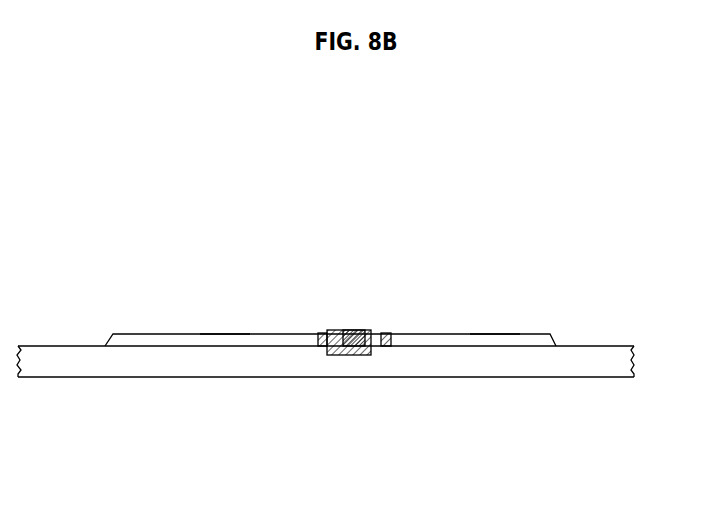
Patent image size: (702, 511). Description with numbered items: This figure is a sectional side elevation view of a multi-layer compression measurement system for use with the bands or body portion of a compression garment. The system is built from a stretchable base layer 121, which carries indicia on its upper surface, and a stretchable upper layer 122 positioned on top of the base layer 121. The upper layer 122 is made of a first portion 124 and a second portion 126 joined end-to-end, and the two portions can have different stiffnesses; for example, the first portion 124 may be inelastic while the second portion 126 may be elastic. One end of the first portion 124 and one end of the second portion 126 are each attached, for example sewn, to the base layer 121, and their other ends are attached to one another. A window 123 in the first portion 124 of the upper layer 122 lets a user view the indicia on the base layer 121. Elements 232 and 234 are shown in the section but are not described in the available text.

The stretchable base layer 121 is at (158, 377).
The stretchable upper layer 122 is at (151, 333).
The window 123 is at (351, 323).
The first portion 124 is at (224, 333).
The second portion 126 is at (493, 333).
The spacer 232 is at (368, 333).
The spacer 234 is at (335, 333).